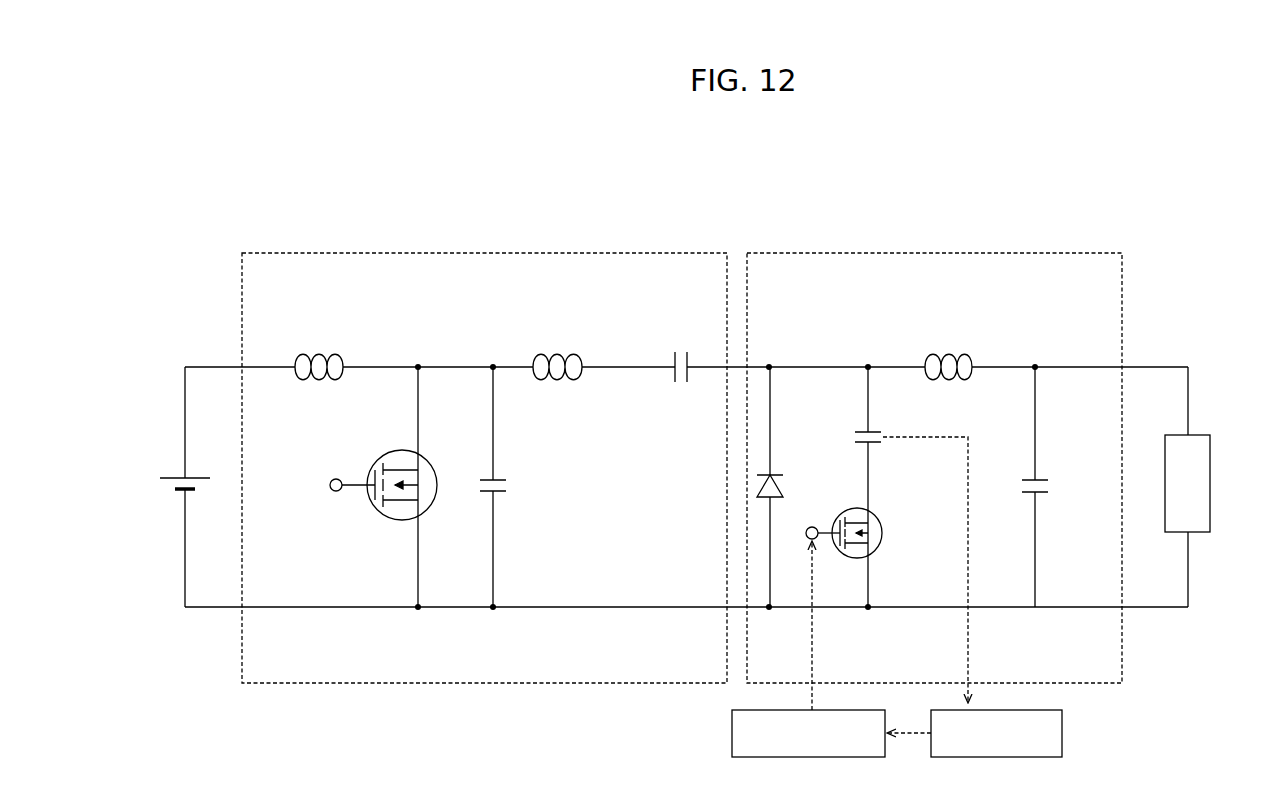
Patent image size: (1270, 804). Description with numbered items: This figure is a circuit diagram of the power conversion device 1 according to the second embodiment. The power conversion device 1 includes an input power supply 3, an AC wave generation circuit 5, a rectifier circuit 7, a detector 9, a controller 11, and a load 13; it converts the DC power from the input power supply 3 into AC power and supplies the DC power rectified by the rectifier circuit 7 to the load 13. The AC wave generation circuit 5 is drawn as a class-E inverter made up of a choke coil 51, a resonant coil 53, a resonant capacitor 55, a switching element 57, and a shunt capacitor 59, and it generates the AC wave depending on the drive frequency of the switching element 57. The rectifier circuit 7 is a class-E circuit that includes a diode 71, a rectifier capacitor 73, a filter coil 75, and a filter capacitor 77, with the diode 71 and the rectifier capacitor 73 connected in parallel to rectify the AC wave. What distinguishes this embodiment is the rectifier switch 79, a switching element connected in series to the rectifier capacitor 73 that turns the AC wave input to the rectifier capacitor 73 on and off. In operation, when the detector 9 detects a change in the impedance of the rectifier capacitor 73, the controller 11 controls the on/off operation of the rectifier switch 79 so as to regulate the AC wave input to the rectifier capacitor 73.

The power conversion device 1 is at (767, 203).
The input power supply 3 is at (163, 474).
The AC wave generation circuit 5 is at (540, 252).
The rectifier circuit 7 is at (915, 252).
The detector 9 is at (1064, 732).
The controller 11 is at (730, 730).
The load 13 is at (1212, 480).
The choke coil 51 is at (345, 360).
The resonant coil 53 is at (584, 360).
The resonant capacitor 55 is at (672, 385).
The switching element 57 is at (370, 512).
The shunt capacitor 59 is at (506, 485).
The diode 71 is at (783, 470).
The rectifier capacitor 73 is at (882, 428).
The filter coil 75 is at (975, 357).
The filter capacitor 77 is at (1048, 484).
The rectifier switch 79 is at (876, 512).